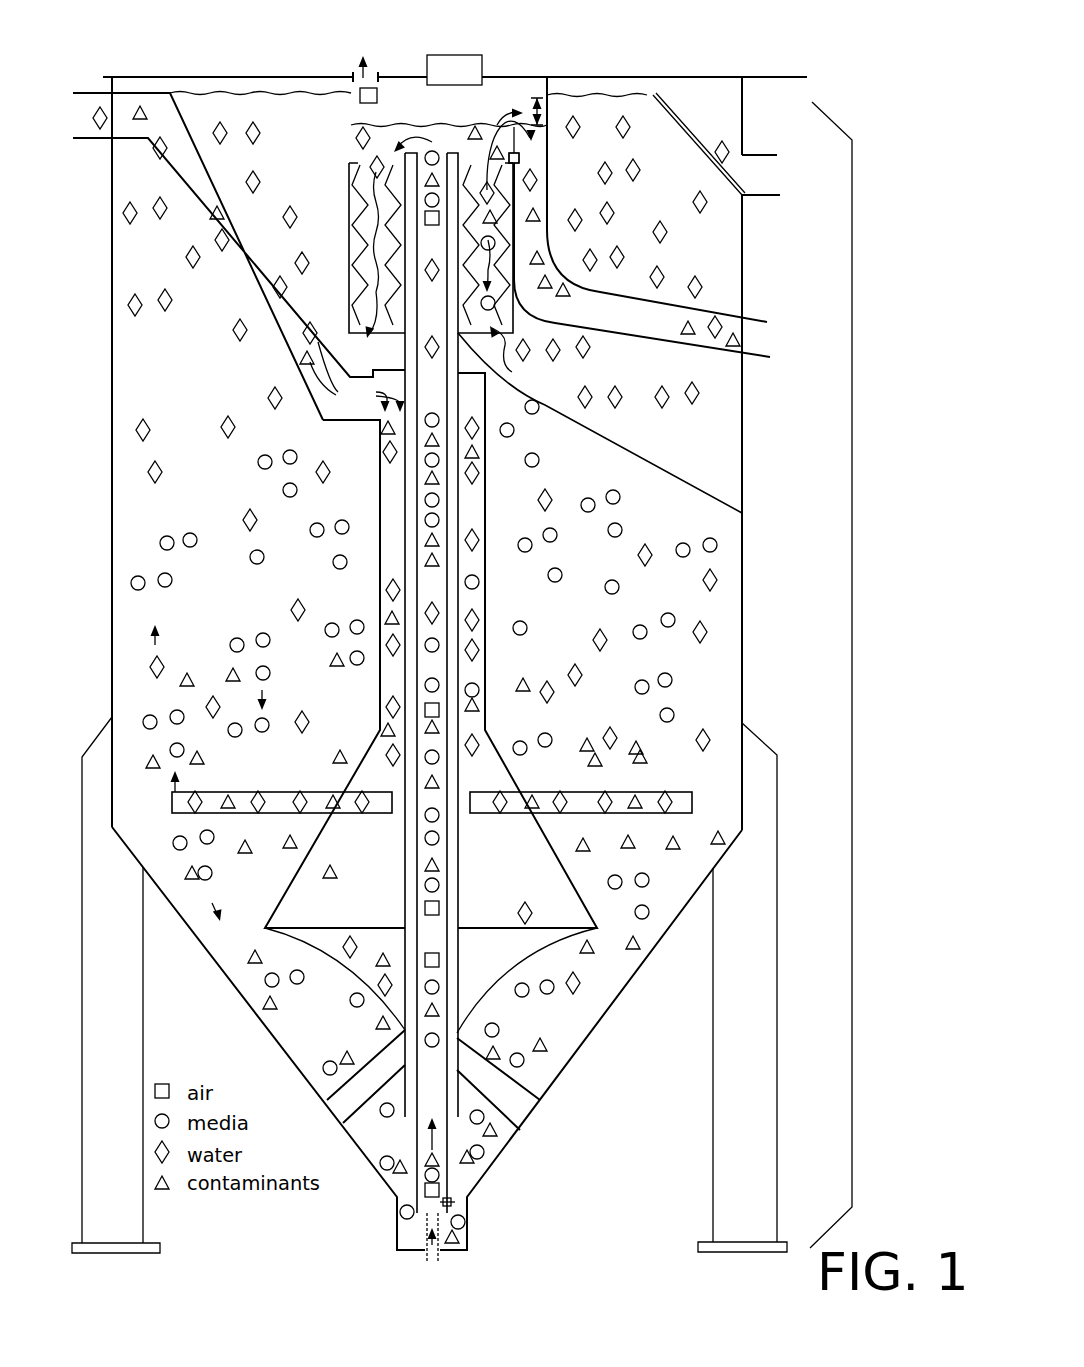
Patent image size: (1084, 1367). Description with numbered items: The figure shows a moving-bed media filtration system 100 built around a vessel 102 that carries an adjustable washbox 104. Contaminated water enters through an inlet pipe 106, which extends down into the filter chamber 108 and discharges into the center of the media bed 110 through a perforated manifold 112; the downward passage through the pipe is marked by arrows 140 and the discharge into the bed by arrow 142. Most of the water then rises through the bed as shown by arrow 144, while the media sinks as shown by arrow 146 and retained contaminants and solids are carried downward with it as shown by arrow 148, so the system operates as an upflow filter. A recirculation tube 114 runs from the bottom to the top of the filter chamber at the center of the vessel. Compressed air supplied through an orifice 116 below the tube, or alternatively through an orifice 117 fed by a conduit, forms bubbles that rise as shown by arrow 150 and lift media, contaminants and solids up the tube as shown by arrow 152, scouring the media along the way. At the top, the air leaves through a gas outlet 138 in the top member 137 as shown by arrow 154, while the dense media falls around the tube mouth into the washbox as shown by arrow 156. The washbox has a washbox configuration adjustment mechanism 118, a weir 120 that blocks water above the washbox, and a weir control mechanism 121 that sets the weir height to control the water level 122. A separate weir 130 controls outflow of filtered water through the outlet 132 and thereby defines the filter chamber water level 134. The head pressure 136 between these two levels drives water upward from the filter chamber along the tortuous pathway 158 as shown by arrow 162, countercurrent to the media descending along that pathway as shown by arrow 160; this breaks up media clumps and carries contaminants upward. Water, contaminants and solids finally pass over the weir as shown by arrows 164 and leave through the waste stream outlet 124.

The moving-bed media filtration system 100 is at (140, 38).
The vessel 102 is at (277, 70).
The adjustable washbox 104 is at (340, 175).
The inlet pipe 106 is at (85, 92).
The filter chamber 108 is at (853, 655).
The media bed 110 is at (660, 458).
The perforated manifold 112 is at (262, 791).
The recirculation tube 114 is at (460, 946).
The orifice 116 is at (440, 1255).
The orifice 117 is at (448, 1200).
The washbox configuration adjustment mechanism 118 is at (470, 80).
The weir 120 is at (519, 158).
The weir control mechanism 121 is at (519, 163).
The water level 122 is at (436, 120).
The waste stream outlet 124 is at (653, 323).
The weir 130 is at (696, 146).
The outlet 132 is at (778, 185).
The water level 134 is at (600, 88).
The head pressure 136 is at (535, 100).
The top member 137 is at (700, 75).
The gas outlet 138 is at (352, 76).
The arrows 140 is at (375, 408).
The arrow 142 is at (172, 785).
The arrow 144 is at (157, 634).
The arrow 146 is at (263, 690).
The arrow 148 is at (212, 903).
The arrow 150 is at (428, 1243).
The arrow 152 is at (430, 1140).
The arrow 154 is at (368, 58).
The arrow 156 is at (394, 121).
The tortuous pathway 158 is at (387, 303).
The arrow 160 is at (513, 275).
The arrow 162 is at (518, 355).
The arrows 164 is at (497, 144).